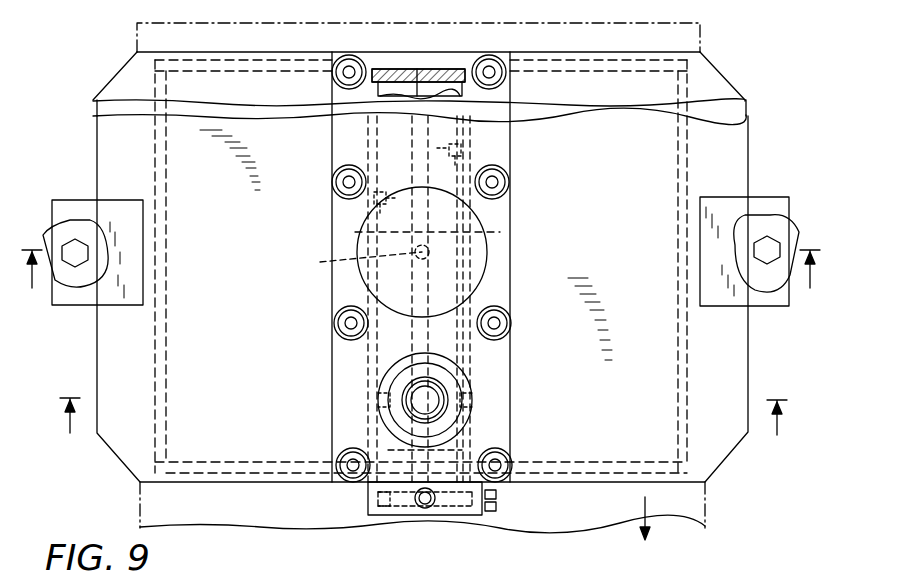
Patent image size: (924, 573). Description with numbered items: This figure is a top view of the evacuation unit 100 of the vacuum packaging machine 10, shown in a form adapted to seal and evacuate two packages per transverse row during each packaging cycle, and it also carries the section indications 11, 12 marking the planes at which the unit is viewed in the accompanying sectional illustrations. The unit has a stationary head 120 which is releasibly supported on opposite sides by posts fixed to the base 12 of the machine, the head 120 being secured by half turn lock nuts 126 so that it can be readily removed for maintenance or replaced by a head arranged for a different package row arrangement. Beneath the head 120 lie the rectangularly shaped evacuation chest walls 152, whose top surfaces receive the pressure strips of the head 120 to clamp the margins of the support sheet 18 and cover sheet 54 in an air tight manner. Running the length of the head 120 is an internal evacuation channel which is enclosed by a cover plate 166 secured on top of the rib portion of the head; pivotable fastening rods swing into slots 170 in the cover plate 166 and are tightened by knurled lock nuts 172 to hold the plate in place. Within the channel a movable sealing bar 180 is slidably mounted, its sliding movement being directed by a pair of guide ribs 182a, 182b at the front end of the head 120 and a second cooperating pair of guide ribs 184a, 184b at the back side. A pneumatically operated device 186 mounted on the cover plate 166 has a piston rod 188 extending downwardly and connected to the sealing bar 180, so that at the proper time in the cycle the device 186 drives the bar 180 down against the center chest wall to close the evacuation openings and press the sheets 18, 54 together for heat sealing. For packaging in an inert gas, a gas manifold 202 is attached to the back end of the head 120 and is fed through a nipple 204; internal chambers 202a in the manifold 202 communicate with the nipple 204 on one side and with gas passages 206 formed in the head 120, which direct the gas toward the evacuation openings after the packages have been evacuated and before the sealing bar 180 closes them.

The evacuation unit 100 is at (757, 103).
The stationary head 120 is at (735, 363).
The half turn lock nuts 126 is at (65, 215).
The evacuation chest walls 152 is at (621, 62).
The cover plate 166 is at (505, 276).
The slots 170 is at (500, 196).
The knurled lock nuts 172 is at (340, 332).
The sealing bar 180 is at (500, 232).
The guide rib 182a is at (408, 68).
The guide rib 182b is at (452, 68).
The guide rib 184a is at (390, 460).
The guide rib 184b is at (445, 450).
The pneumatically operated device 186 is at (357, 248).
The piston rod 188 is at (355, 232).
The gas manifold 202 is at (482, 512).
The internal chambers 202a is at (398, 504).
The nipple 204 is at (425, 500).
The gas passages 206 is at (372, 210).
The vacuum packaging machine 10 is at (420, 295).
The section view indicator FIG. 11 is at (77, 435).
The pedestal support or base 12 is at (787, 436).
The cover sheet 54 is at (705, 526).
The support sheet 18 is at (645, 518).